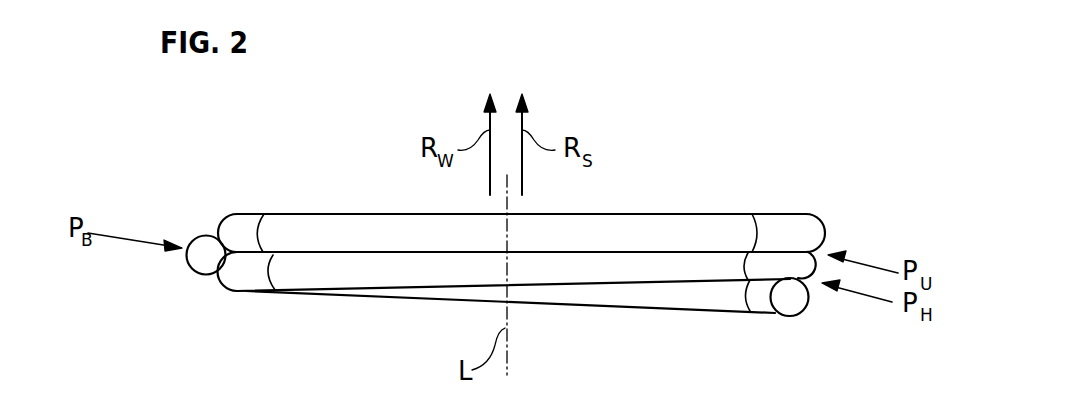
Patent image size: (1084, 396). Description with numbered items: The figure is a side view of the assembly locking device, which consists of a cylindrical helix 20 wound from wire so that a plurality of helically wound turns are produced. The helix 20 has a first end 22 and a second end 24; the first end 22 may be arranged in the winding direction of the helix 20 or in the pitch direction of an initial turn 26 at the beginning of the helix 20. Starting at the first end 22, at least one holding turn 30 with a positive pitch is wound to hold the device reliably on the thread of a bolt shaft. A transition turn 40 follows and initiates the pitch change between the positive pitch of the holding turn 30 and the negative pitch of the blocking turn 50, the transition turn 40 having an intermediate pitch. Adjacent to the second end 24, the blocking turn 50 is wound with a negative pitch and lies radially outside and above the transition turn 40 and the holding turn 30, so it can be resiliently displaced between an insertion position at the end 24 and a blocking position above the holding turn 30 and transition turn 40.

The cylindrical helix 20 is at (774, 190).
The first end 22 is at (783, 314).
The second end 24 is at (248, 216).
The initial turn 26 is at (806, 322).
The holding turn 30 is at (677, 303).
The transition turn 40 is at (400, 219).
The blocking turn 50 is at (195, 263).